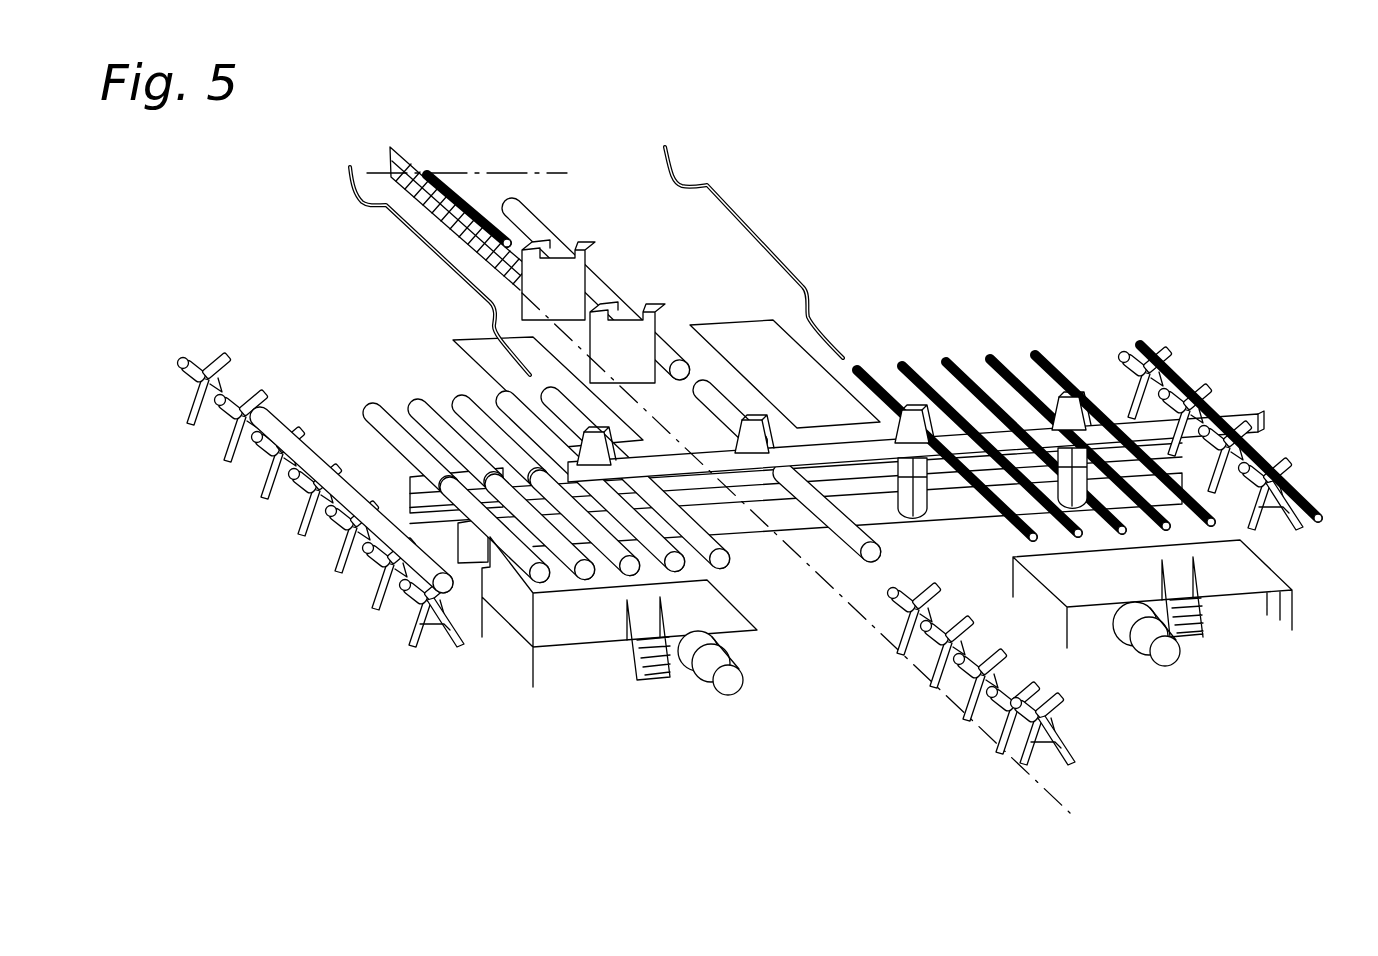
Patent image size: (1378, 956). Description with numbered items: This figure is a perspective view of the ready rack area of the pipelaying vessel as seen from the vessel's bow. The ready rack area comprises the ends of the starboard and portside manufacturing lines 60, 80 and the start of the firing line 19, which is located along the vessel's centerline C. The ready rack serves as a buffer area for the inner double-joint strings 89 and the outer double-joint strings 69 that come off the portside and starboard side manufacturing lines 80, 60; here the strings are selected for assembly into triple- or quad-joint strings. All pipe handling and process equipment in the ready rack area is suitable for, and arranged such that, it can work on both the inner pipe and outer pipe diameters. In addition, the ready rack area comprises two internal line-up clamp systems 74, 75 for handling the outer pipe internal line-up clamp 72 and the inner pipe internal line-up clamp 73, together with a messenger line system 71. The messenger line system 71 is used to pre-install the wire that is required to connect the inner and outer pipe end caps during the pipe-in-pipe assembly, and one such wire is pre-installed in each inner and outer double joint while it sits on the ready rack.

The firing line 19 is at (422, 176).
The messenger line system 71 is at (382, 203).
The outer double-joint strings 69 is at (407, 423).
The starboard manufacturing line 60 is at (186, 364).
The inner double-joint strings 89 is at (963, 362).
The portside manufacturing line 80 is at (1162, 338).
The internal line-up clamp system 74 is at (917, 507).
The internal line-up clamp system 75 is at (1075, 495).
The outer pipe internal line-up clamp 72 is at (723, 690).
The inner pipe internal line-up clamp 73 is at (1170, 654).
The vessel's centerline C is at (1060, 798).